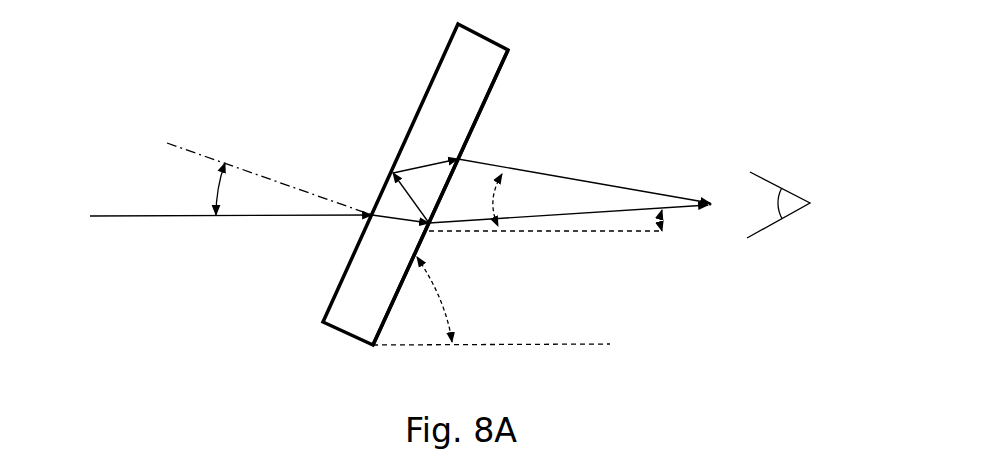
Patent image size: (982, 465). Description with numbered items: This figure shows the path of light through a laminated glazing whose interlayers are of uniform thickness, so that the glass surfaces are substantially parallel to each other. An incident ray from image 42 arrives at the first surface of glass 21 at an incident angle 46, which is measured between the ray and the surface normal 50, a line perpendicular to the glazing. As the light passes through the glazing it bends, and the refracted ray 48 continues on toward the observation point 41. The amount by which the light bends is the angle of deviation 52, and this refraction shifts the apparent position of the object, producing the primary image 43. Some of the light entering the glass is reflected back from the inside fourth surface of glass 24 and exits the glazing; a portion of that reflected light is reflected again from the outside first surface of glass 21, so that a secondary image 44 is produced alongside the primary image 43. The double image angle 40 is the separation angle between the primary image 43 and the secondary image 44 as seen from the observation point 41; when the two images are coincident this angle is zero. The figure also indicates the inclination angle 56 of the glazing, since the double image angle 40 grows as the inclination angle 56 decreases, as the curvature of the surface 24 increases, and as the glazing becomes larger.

The first surface of glass 21 is at (443, 50).
The fourth surface of glass 24 is at (503, 60).
The double image angle 40 is at (508, 192).
The observation point 41 is at (815, 197).
The incident ray from image 42 is at (208, 215).
The primary image 43 is at (432, 226).
The secondary image 44 is at (584, 166).
The incident angle 46 is at (197, 189).
The refracted ray 48 is at (713, 217).
The surface normal 50 is at (250, 167).
The angle of deviation 52 is at (672, 232).
The inclination angle 56 is at (448, 290).